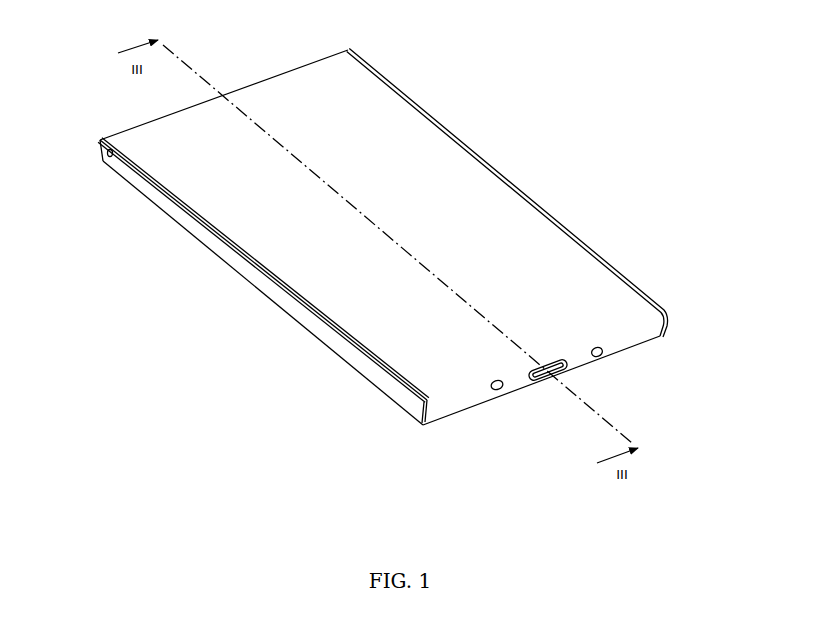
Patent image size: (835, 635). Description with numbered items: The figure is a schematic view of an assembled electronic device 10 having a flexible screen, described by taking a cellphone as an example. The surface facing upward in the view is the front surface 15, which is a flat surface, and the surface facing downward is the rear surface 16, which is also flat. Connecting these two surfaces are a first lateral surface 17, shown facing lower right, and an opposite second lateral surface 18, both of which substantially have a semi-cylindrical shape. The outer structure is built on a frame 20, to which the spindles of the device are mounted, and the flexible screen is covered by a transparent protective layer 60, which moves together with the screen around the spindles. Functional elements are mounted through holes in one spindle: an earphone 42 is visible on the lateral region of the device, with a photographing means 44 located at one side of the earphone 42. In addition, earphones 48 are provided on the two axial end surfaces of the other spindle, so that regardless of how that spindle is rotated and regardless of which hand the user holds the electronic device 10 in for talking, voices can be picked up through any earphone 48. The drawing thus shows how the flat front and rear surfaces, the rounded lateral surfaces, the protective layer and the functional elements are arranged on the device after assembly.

The electronic device 10 is at (420, 82).
The transparent protective layer 60 is at (442, 167).
The front surface 15 is at (522, 217).
The first lateral surface 17 is at (658, 336).
The frame 20 is at (200, 222).
The rear surface 16 is at (298, 322).
The second lateral surface 18 is at (100, 143).
The earphones 48 is at (113, 158).
The photographing means 44 is at (508, 397).
The earphone 42 is at (552, 380).